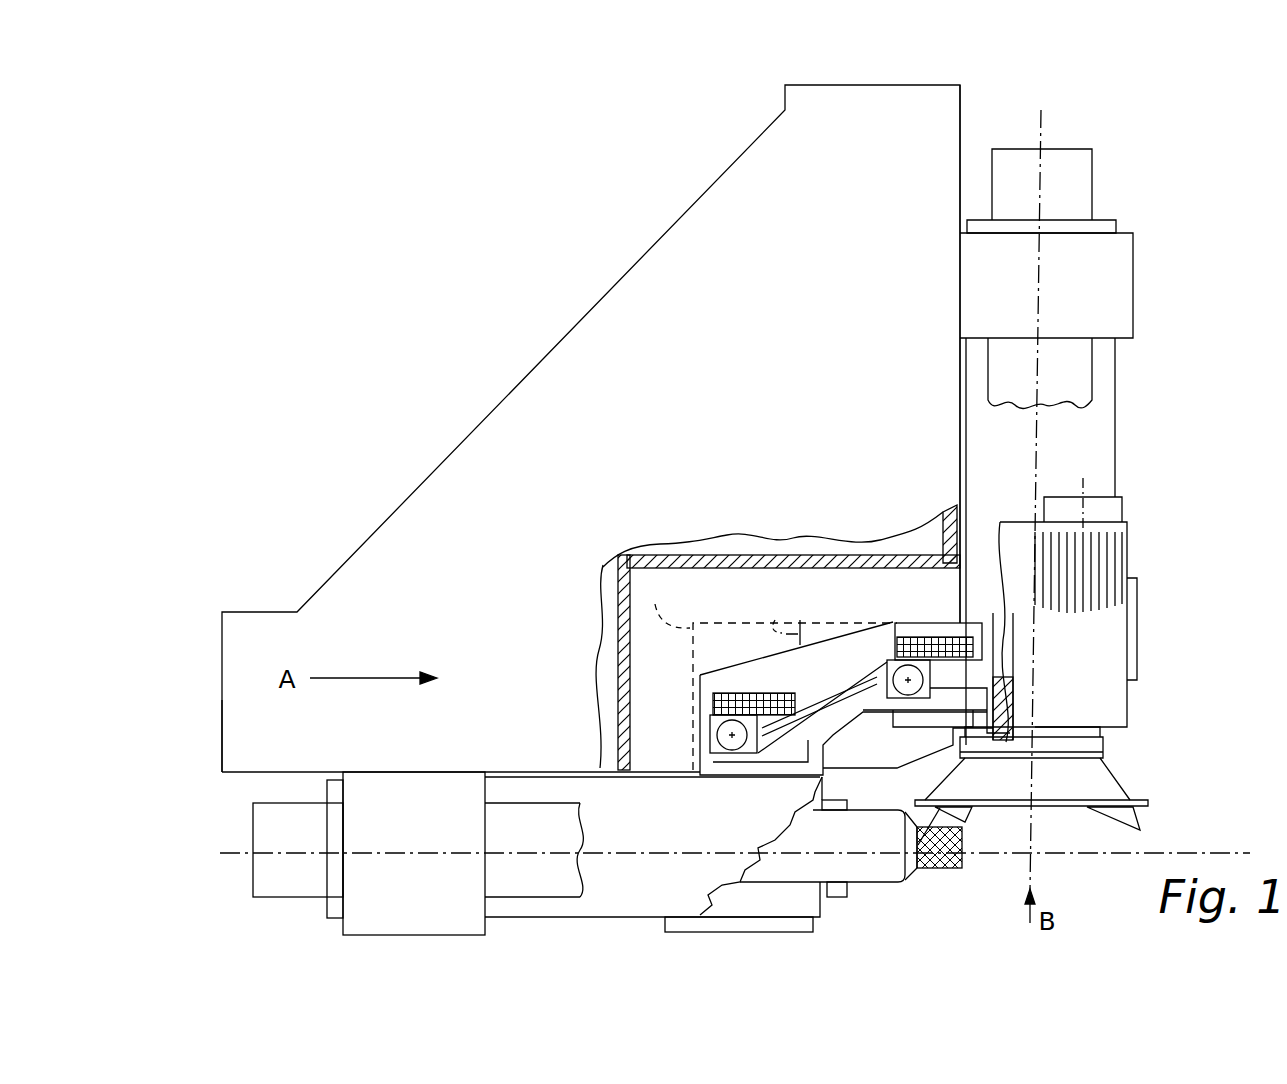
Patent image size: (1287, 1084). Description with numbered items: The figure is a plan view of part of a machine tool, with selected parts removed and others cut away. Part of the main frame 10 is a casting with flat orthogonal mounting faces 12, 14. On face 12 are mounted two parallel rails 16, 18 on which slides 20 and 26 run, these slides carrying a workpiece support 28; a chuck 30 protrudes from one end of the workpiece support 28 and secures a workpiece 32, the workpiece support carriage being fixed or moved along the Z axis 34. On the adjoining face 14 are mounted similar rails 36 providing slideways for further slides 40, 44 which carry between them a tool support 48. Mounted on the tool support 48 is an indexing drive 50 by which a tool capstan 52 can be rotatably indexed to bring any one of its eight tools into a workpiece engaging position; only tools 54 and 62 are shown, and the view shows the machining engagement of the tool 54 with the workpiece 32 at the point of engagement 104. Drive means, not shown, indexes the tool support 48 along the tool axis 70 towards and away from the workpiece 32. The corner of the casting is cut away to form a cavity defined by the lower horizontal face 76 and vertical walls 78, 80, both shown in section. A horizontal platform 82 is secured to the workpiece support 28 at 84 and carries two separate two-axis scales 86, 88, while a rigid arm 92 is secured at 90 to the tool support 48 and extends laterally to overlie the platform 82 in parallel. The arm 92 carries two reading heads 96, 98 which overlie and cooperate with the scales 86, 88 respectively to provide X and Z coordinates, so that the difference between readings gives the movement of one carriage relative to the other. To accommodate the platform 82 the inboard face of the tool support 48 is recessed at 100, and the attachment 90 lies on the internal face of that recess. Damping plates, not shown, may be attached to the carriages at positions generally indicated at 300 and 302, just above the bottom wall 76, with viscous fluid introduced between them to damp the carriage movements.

The main frame 10 is at (558, 484).
The mounting face 12 is at (222, 773).
The mounting face 14 is at (963, 152).
The rail 16 is at (265, 898).
The rail 18 is at (843, 898).
The upper slide 20 is at (384, 903).
The lower slide 26 is at (752, 933).
The workpiece support 28 is at (603, 918).
The chuck 30 is at (890, 884).
The workpiece 32 is at (962, 870).
The Z axis 34 is at (253, 853).
The rail 36 is at (1093, 178).
The slide 40 is at (1138, 632).
The slide 44 is at (1135, 295).
The tool support 48 is at (1117, 432).
The indexing drive 50 is at (1128, 548).
The tool capstan 52 is at (1118, 776).
The tool 54 is at (963, 815).
The tool 62 is at (1142, 826).
The tool axis 70 is at (1045, 130).
The lower horizontal face 76 is at (790, 592).
The vertical wall 78 is at (725, 568).
The vertical wall 80 is at (634, 687).
The horizontal platform 82 is at (807, 653).
The attachment point 84 is at (708, 777).
The scale 86 is at (760, 697).
The scale 88 is at (913, 637).
The attachment point 90 is at (1000, 681).
The rigid arm 92 is at (853, 673).
The reading head 96 is at (693, 735).
The reading head 98 is at (1010, 698).
The recess 100 is at (945, 560).
The point of engagement 104 is at (940, 866).
The damping plate position 300 is at (792, 619).
The damping plate position 302 is at (664, 603).